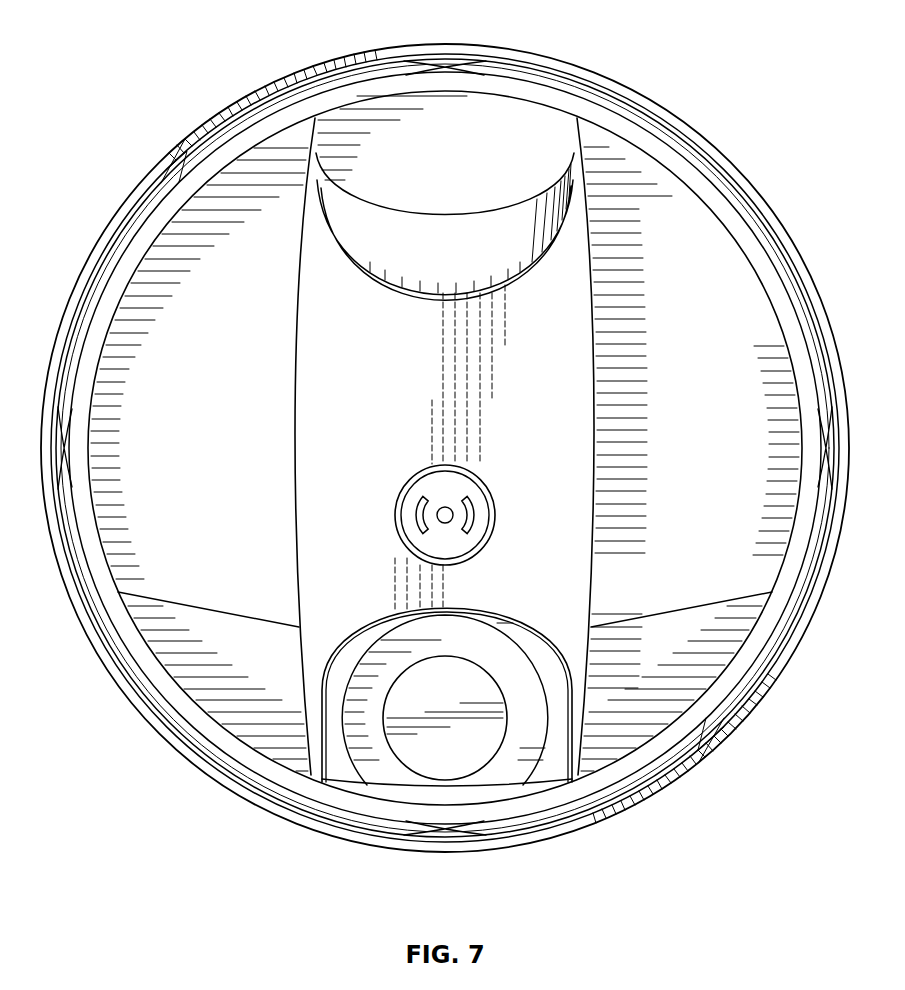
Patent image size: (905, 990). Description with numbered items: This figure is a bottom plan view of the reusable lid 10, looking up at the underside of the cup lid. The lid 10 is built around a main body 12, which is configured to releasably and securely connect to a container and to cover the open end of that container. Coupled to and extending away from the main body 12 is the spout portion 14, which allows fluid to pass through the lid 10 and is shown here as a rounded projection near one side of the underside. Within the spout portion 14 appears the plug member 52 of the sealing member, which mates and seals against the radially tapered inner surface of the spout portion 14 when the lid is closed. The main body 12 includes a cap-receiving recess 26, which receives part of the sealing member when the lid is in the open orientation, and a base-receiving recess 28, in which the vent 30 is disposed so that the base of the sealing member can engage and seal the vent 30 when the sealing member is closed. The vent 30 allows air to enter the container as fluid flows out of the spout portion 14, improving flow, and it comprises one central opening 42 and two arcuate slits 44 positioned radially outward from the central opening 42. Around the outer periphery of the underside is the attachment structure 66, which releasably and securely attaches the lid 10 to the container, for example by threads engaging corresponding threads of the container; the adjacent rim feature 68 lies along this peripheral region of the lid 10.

The reusable lid 10 is at (160, 42).
The main body 12 is at (210, 356).
The spout portion 14 is at (377, 757).
The cap-receiving recess 26 is at (543, 126).
The base-receiving recess 28 is at (565, 392).
The vent 30 is at (463, 488).
The central opening 42 is at (440, 508).
The arcuate slits 44 is at (420, 528).
The plug member 52 is at (448, 740).
The attachment structure 66 is at (712, 698).
The seal ring 68 is at (642, 777).